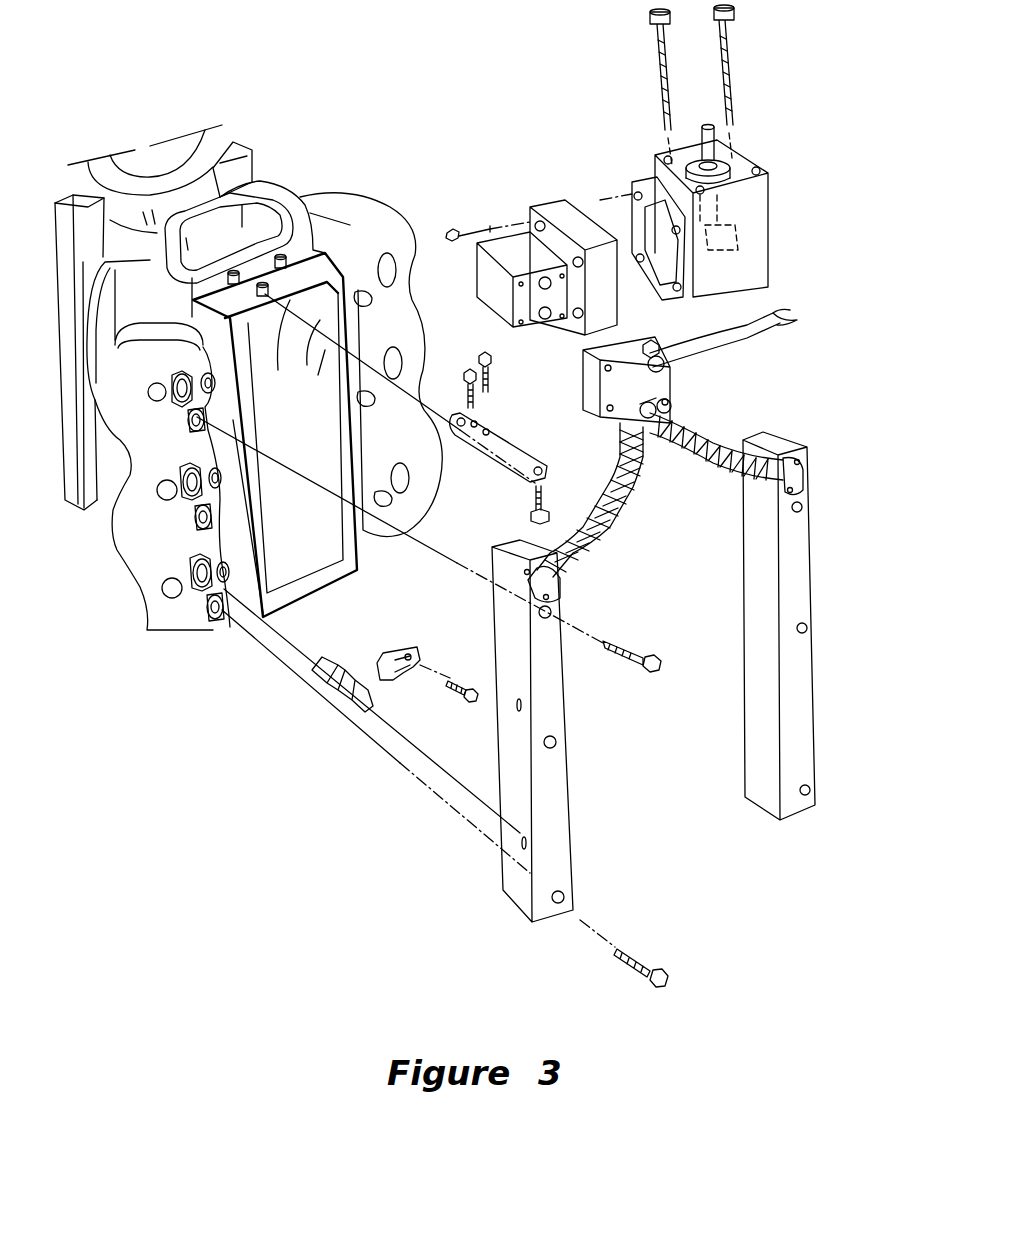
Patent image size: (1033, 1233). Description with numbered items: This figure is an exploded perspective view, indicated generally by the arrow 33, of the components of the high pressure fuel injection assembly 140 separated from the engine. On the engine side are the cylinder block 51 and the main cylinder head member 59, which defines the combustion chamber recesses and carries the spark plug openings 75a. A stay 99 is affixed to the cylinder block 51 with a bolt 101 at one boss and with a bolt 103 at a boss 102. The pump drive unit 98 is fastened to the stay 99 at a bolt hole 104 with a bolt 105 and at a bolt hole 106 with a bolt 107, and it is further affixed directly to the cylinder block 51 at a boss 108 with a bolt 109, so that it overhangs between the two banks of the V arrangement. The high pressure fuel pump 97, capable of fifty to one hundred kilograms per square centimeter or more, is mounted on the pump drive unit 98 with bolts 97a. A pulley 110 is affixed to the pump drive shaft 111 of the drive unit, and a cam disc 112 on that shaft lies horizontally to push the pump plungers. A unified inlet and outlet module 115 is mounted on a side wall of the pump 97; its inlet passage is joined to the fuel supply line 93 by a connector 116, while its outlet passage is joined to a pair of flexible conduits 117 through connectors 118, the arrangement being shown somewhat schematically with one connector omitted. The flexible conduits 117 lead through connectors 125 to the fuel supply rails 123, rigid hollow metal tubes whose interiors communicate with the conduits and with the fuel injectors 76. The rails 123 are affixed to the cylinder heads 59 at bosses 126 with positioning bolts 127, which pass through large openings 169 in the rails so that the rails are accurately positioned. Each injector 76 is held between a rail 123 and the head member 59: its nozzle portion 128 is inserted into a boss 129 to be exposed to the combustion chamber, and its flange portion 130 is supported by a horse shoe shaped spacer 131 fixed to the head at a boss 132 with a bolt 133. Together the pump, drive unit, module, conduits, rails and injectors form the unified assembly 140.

The fuel delivery assembly 33 is at (402, 167).
The cylinder block 51 is at (324, 262).
The cylinder head member 59 is at (400, 230).
The spark plug opening 75a is at (152, 392).
The fuel injector 76 is at (354, 728).
The fuel supply line 93 is at (787, 333).
The high pressure fuel pump 97 is at (513, 247).
The bolt 97a is at (455, 245).
The pump drive unit 98 is at (753, 153).
The stay 99 is at (501, 475).
The bolt 101 is at (463, 377).
The boss 102 is at (261, 282).
The bolt 103 is at (493, 372).
The bolt hole 104 is at (506, 455).
The bolt 105 is at (660, 70).
The bolt hole 106 is at (530, 457).
The bolt 107 is at (541, 500).
The boss 108 is at (296, 258).
The bolt 109 is at (733, 72).
The pulley 110 is at (238, 270).
The pump drive shaft 111 is at (707, 123).
The cam disc 112 is at (720, 207).
The inlet and outlet module 115 is at (677, 377).
The connector 116 is at (637, 360).
The flexible conduit 117 is at (617, 507).
The connector 118 is at (677, 397).
The fuel supply rail 123 is at (745, 683).
The connector 125 is at (545, 580).
The boss 126 is at (208, 420).
The positioning bolt 127 is at (637, 653).
The nozzle portion 128 is at (323, 667).
The boss 129 is at (175, 378).
The flange portion 130 is at (330, 683).
The horse shoe shaped spacer 131 is at (393, 647).
The boss 132 is at (220, 384).
The bolt 133 is at (470, 697).
The high pressure fuel injection assembly 140 is at (680, 752).
The large opening 169 is at (552, 612).